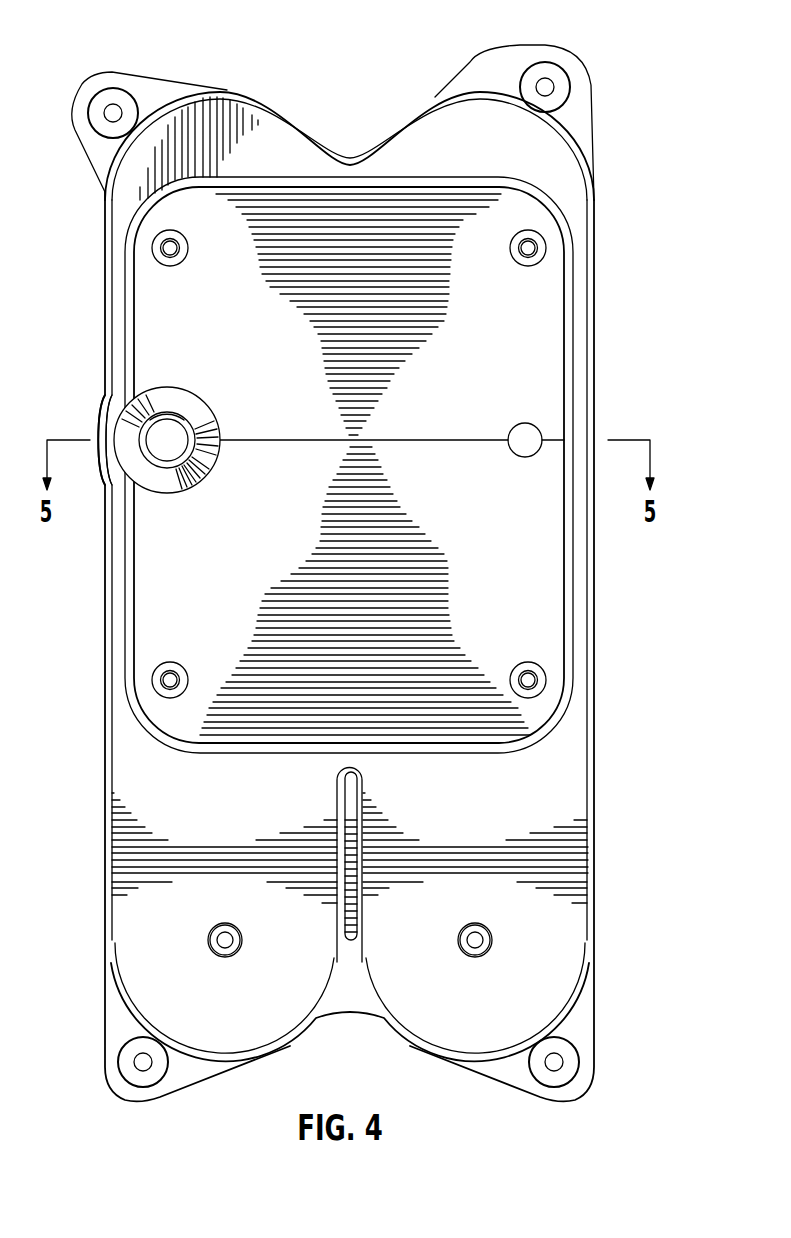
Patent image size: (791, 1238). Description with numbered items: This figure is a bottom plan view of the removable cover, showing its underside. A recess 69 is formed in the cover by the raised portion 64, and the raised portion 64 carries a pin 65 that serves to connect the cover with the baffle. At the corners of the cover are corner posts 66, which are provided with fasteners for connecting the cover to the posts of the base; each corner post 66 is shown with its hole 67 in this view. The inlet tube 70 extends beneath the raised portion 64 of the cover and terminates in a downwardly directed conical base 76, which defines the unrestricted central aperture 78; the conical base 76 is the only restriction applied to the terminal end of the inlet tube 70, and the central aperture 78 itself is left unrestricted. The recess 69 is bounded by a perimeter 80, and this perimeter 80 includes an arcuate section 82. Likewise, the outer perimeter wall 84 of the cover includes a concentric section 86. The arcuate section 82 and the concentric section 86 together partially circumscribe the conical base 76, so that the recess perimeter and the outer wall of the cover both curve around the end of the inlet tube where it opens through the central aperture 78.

The raised portion 64 is at (540, 666).
The pin 65 is at (531, 683).
The corner post 66 is at (580, 62).
The mounting hole 67 is at (546, 79).
The recess 69 is at (457, 518).
The inlet tube 70 is at (210, 390).
The conical base 76 is at (157, 485).
The central aperture 78 is at (168, 448).
The perimeter 80 is at (273, 753).
The arcuate section 82 is at (115, 460).
The outer perimeter wall 84 is at (593, 787).
The concentric section 86 is at (100, 430).